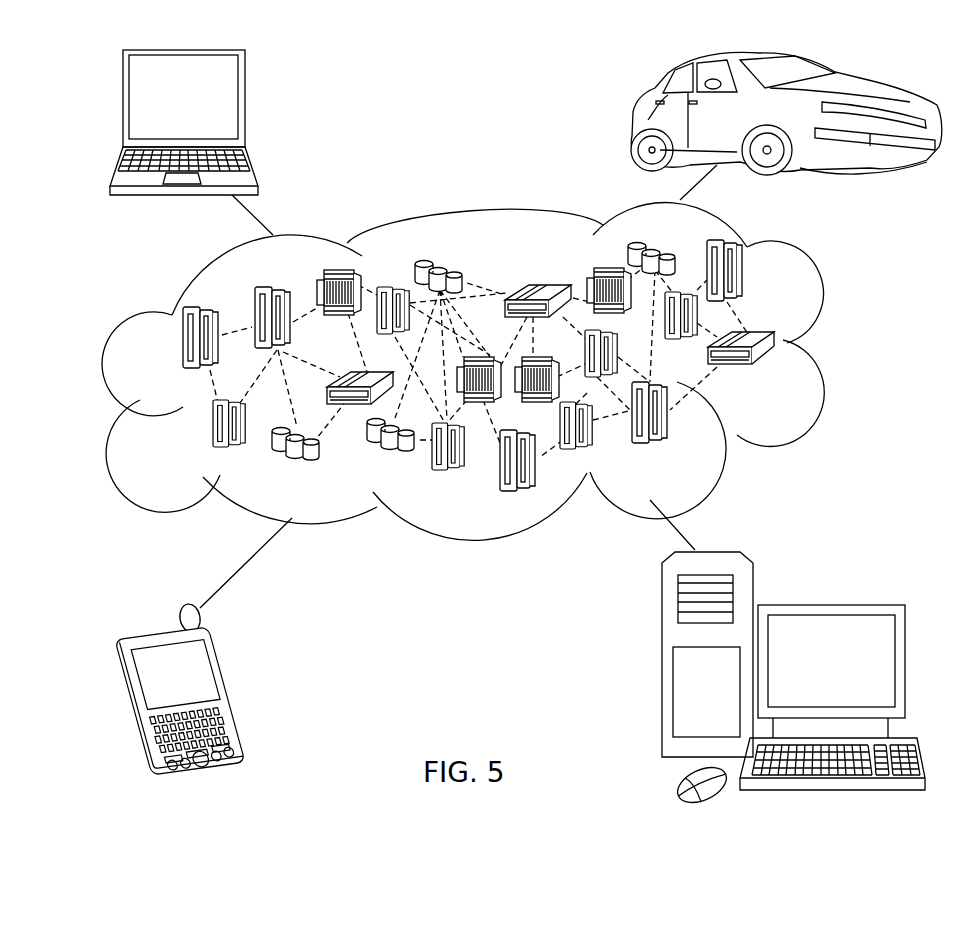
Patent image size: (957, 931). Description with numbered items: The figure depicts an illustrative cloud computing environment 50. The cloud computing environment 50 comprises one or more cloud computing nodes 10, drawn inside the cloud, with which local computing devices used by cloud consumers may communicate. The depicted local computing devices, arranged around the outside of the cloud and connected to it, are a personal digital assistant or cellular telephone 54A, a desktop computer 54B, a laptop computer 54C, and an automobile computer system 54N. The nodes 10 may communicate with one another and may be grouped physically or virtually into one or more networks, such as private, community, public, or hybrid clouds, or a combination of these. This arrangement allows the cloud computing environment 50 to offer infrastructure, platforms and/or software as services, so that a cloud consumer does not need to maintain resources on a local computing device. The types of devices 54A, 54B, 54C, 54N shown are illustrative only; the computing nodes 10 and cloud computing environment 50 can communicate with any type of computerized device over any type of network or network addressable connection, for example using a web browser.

The cloud computing environment 50 is at (832, 346).
The cloud computing node 10 is at (782, 375).
The personal digital assistant or cellular telephone 54A is at (237, 686).
The desktop computer 54B is at (828, 602).
The laptop computer 54C is at (245, 103).
The automobile computer system 54N is at (633, 118).